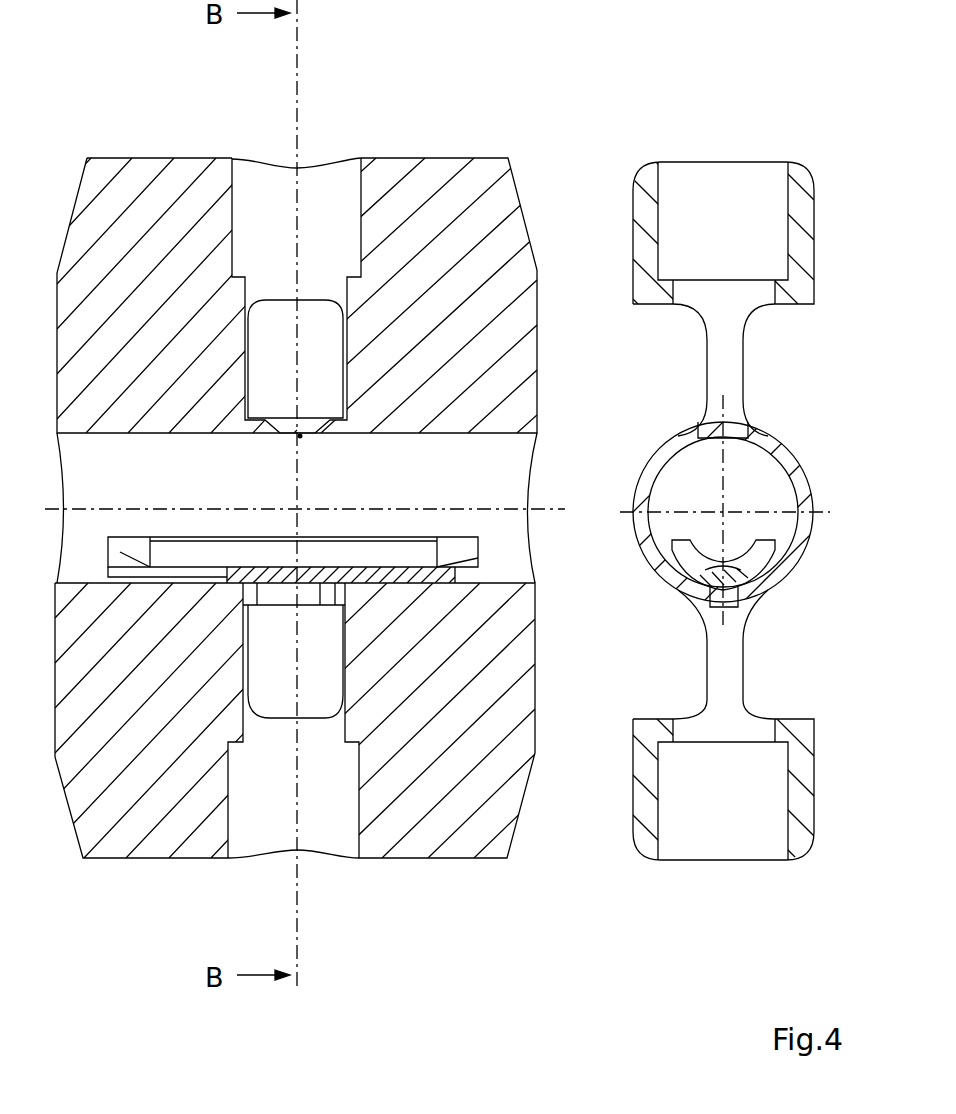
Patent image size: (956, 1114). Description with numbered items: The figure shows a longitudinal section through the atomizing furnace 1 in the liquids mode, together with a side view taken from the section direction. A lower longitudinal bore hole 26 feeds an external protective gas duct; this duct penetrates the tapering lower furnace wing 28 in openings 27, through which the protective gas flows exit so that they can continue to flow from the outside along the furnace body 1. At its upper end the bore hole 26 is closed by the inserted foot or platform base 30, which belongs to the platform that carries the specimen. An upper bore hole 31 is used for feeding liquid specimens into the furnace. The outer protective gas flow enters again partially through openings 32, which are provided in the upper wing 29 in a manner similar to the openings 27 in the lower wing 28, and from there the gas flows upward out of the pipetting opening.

The atomizing furnace 1 is at (112, 156).
The longitudinal bore hole 26 is at (338, 157).
The opening 27 is at (283, 672).
The lower furnace wing 28 is at (450, 805).
The upper furnace wing 29 is at (428, 270).
The platform base 30 is at (345, 595).
The bore hole 31 is at (300, 437).
The opening 32 is at (313, 347).